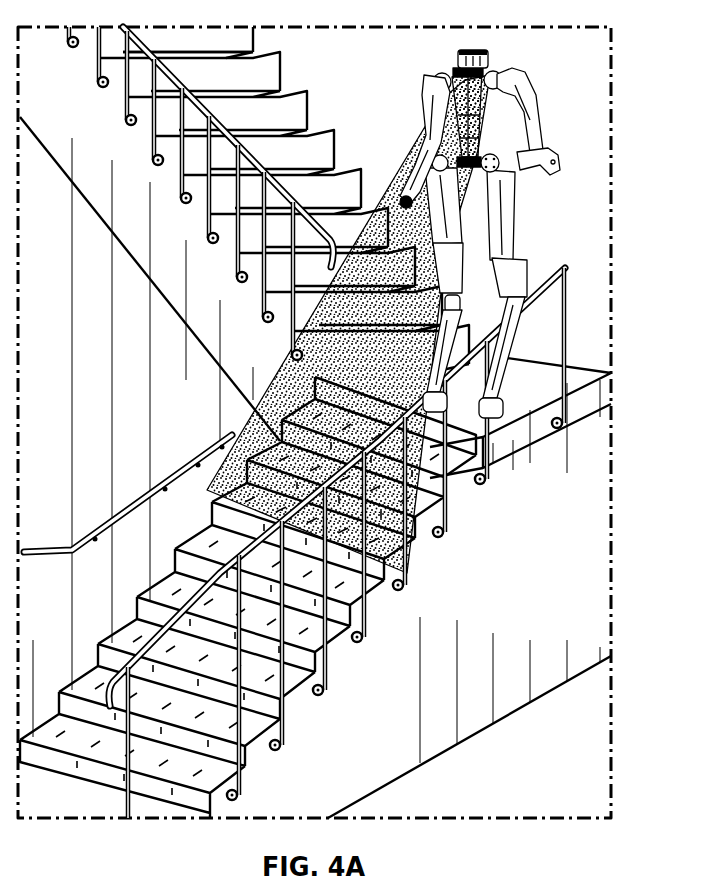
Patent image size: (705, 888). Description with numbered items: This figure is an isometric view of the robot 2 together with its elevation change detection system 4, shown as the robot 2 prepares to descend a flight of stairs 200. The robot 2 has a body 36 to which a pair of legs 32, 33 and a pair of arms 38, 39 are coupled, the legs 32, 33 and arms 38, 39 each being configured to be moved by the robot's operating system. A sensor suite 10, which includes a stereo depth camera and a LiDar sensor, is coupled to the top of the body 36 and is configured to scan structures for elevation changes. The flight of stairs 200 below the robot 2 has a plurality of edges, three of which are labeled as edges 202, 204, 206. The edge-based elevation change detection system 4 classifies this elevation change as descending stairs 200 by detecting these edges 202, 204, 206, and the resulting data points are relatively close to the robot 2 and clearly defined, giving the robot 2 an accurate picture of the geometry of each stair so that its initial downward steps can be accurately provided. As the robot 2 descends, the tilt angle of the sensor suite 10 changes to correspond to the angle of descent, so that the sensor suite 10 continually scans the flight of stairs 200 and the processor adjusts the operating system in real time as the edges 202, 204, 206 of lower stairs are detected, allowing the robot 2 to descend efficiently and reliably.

The robot 2 is at (512, 221).
The elevation change detection system 4 is at (435, 65).
The sensor suite 10 is at (488, 56).
The leg 32 is at (507, 347).
The leg 33 is at (448, 328).
The body 36 is at (487, 125).
The arm 38 is at (423, 120).
The arm 39 is at (538, 140).
The flight of stairs 200 is at (500, 735).
The edge 202 is at (317, 380).
The edge 204 is at (458, 477).
The edge 206 is at (283, 433).